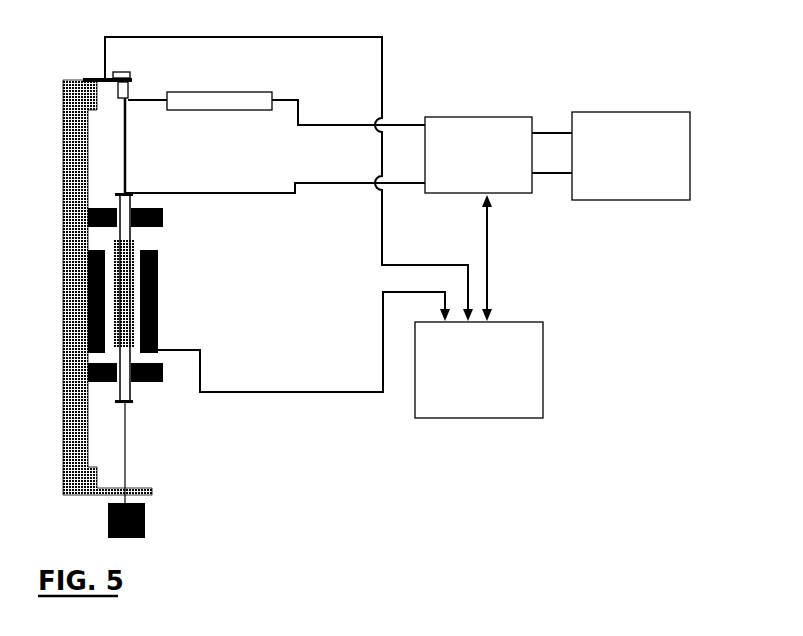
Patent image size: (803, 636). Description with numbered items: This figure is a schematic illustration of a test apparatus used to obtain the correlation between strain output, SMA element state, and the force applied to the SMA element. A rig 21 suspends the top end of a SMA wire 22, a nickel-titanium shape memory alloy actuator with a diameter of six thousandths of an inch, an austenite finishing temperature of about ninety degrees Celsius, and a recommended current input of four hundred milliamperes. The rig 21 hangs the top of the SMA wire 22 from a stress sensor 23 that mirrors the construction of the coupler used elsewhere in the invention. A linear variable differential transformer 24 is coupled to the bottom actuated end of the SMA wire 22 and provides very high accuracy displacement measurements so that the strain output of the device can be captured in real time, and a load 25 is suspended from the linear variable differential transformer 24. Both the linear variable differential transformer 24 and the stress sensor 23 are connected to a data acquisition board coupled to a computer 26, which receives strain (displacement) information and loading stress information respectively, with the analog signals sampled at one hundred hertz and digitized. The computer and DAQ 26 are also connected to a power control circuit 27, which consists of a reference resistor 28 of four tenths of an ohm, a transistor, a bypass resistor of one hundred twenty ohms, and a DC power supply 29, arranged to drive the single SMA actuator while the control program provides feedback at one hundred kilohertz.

The rig 21 is at (76, 93).
The SMA wire 22 is at (126, 147).
The stress sensor 23 is at (102, 77).
The linear variable differential transformer 24 is at (160, 284).
The load 25 is at (146, 528).
The computer and DAQ 26 is at (527, 341).
The power control circuit 27 is at (442, 192).
The reference resistor 28 is at (242, 97).
The DC power supply 29 is at (586, 200).